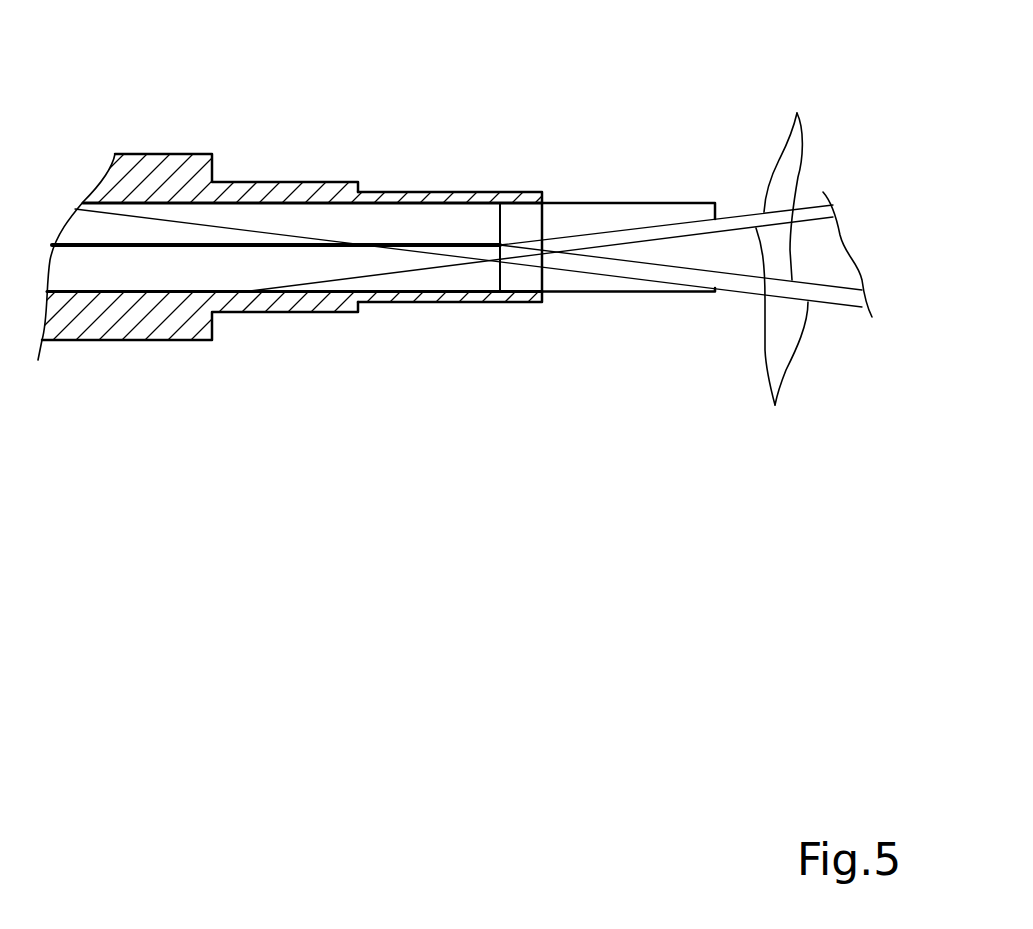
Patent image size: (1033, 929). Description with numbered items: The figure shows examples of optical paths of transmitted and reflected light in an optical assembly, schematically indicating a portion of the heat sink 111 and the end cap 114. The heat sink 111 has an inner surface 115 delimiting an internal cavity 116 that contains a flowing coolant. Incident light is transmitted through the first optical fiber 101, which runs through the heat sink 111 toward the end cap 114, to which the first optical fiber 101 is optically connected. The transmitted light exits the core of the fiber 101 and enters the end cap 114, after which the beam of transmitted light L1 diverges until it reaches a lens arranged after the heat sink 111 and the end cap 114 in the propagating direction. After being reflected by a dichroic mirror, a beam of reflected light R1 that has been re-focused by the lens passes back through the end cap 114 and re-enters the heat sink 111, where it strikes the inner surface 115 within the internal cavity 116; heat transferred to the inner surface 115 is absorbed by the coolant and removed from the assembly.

The first optical fiber 101 is at (97, 240).
The heat sink 111 is at (262, 181).
The end cap 114 is at (617, 202).
The inner surface 115 is at (383, 203).
The internal cavity 116 is at (165, 282).
The transmitted light L1 is at (786, 244).
The reflected light R1 is at (818, 322).